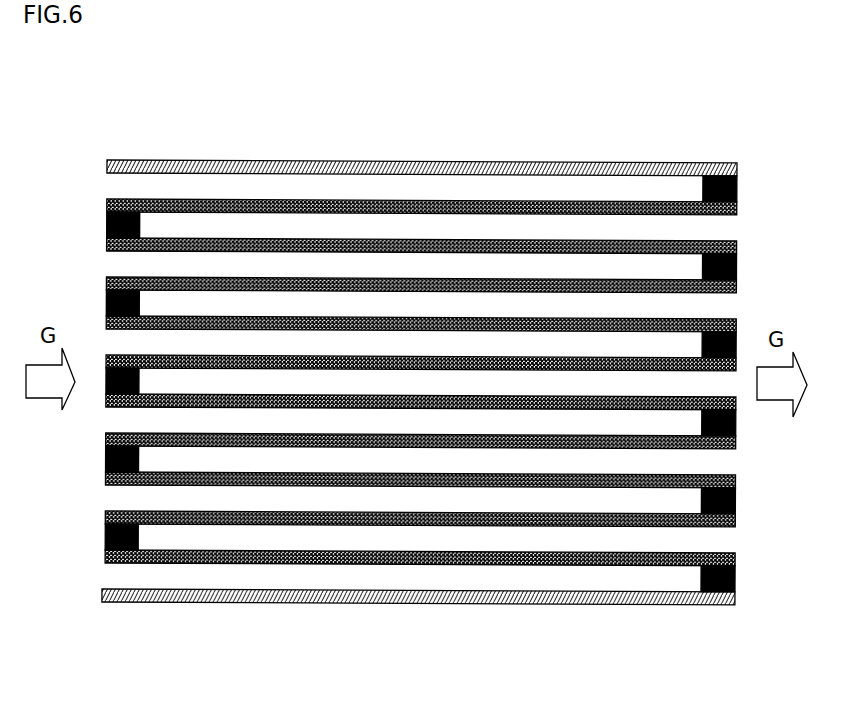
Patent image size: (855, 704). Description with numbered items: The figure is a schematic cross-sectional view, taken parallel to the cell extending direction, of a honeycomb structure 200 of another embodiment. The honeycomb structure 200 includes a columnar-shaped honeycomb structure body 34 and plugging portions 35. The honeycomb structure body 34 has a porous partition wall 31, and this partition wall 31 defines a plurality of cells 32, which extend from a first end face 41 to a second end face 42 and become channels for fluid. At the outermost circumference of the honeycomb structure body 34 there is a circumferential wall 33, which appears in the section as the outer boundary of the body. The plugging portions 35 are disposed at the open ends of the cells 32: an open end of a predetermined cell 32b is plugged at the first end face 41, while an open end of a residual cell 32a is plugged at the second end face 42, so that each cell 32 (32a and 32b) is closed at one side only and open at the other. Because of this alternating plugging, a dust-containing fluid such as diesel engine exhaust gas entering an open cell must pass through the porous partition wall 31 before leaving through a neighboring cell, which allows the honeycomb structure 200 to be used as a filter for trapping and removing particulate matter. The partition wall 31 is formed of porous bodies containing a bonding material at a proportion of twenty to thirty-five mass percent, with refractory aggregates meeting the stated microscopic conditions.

The honeycomb structure 200 is at (733, 65).
The partition wall 31 is at (455, 208).
The cell 32 is at (467, 186).
The residual cell 32a is at (228, 266).
The predetermined cell 32b is at (627, 230).
The circumferential wall 33 is at (517, 162).
The honeycomb structure body 34 is at (572, 160).
The plugging portion 35 is at (107, 222).
The first end face 41 is at (93, 587).
The second end face 42 is at (745, 585).